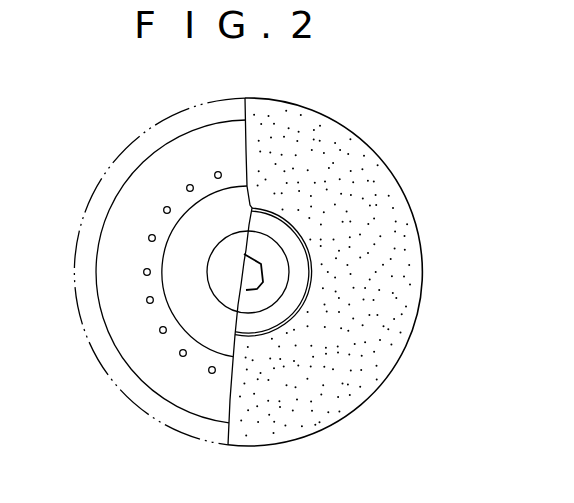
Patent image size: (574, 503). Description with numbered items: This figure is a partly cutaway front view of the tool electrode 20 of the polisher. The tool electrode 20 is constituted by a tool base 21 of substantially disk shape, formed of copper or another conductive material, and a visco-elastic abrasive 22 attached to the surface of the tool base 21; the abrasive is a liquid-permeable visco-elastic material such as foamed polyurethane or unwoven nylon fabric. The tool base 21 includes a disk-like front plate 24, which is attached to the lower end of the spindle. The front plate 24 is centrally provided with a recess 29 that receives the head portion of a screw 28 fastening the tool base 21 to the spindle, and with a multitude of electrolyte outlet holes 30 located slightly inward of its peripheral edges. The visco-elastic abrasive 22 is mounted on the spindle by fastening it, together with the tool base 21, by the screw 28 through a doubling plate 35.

The tool electrode 20 is at (384, 118).
The tool base 21 is at (90, 312).
The visco-elastic abrasive 22 is at (409, 223).
The front plate 24 is at (152, 378).
The screw 28 is at (255, 282).
The recess 29 is at (208, 263).
The electrolyte outlet holes 30 is at (216, 173).
The doubling plate 35 is at (300, 250).